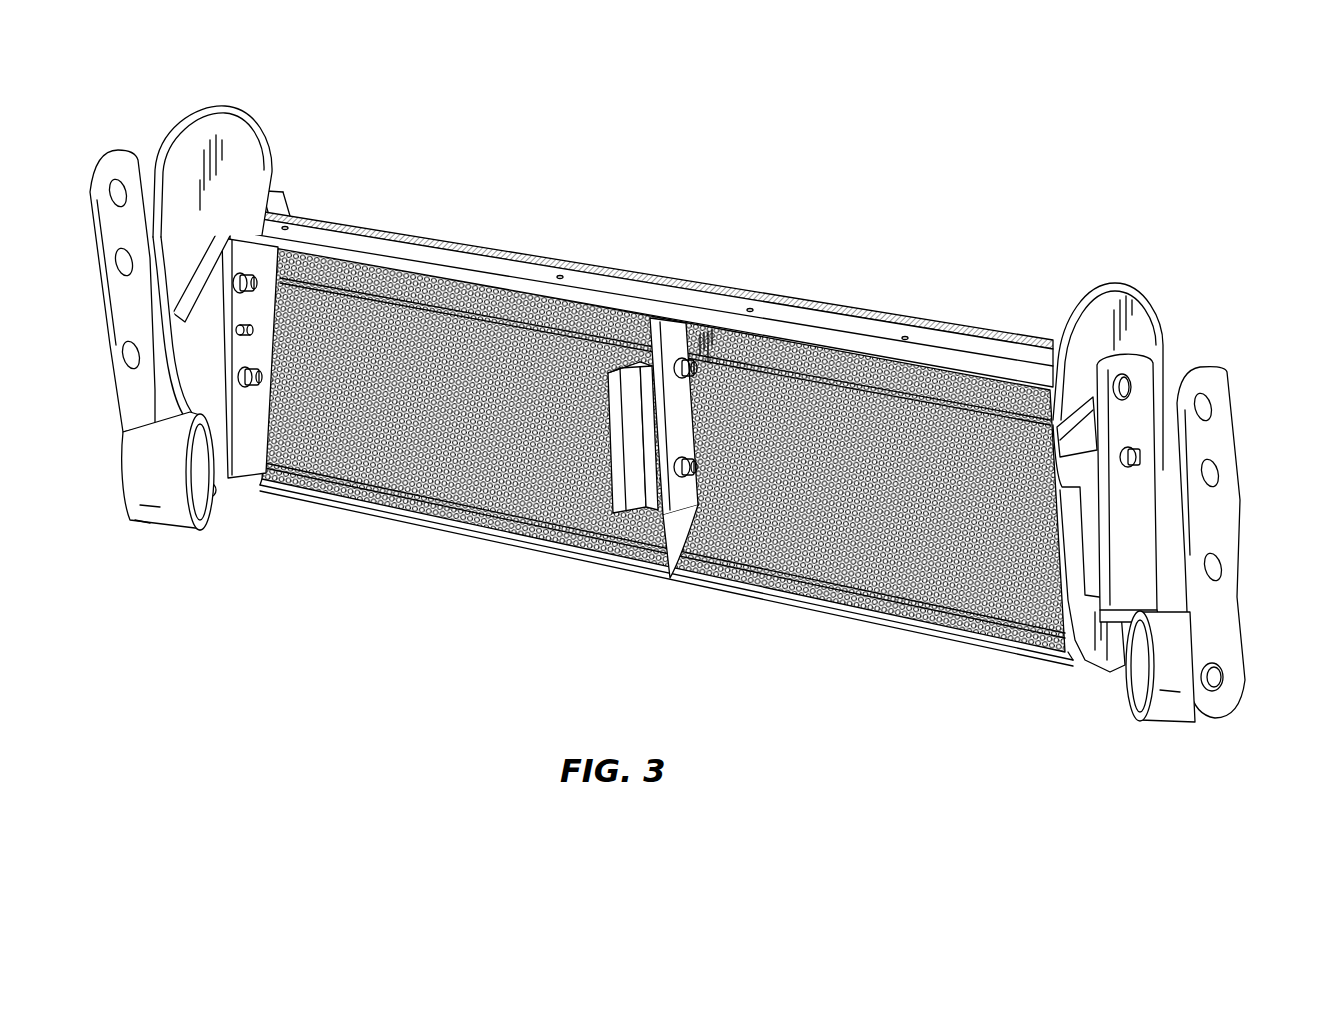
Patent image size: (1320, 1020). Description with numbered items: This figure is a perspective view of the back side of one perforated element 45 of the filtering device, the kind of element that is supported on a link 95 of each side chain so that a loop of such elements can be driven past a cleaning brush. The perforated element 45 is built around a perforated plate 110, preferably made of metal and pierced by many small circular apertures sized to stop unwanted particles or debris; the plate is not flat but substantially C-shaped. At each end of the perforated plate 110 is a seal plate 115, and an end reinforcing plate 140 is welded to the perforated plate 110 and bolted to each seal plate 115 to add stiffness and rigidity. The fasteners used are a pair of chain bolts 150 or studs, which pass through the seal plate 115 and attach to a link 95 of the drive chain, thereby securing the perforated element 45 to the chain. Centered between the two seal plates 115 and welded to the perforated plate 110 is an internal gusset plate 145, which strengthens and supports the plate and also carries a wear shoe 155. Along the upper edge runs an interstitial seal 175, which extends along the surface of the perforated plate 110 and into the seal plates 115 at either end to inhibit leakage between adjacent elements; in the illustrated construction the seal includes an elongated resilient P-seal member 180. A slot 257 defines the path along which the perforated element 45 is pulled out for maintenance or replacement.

The perforated element 45 is at (1012, 224).
The link 95 is at (125, 312).
The perforated plate 110 is at (357, 460).
The seal plate 115 is at (255, 140).
The end reinforcing plate 140 is at (282, 300).
The internal gusset plate 145 is at (660, 365).
The chain bolt 150 is at (248, 282).
The wear shoe 155 is at (688, 485).
The interstitial seal 175 is at (552, 270).
The P-seal member 180 is at (502, 262).
The slot 257 is at (1077, 423).